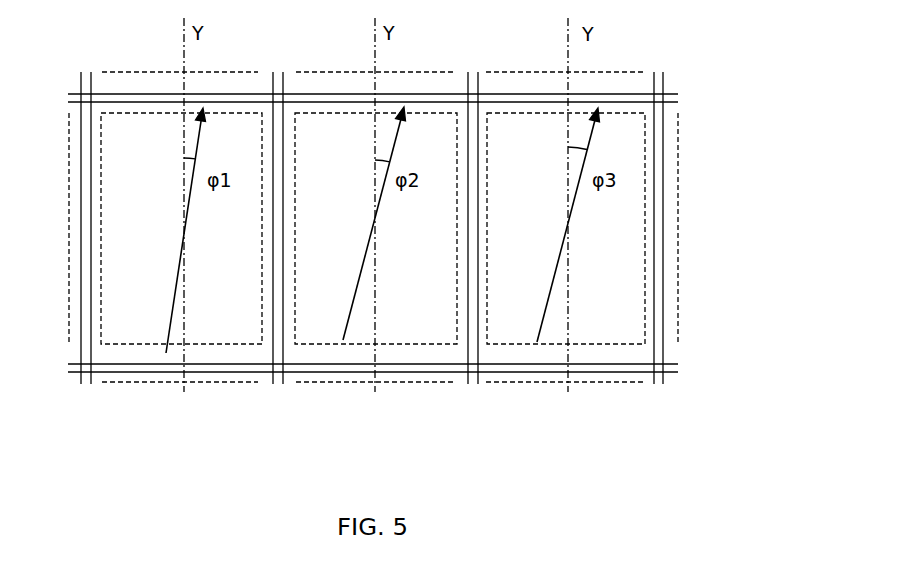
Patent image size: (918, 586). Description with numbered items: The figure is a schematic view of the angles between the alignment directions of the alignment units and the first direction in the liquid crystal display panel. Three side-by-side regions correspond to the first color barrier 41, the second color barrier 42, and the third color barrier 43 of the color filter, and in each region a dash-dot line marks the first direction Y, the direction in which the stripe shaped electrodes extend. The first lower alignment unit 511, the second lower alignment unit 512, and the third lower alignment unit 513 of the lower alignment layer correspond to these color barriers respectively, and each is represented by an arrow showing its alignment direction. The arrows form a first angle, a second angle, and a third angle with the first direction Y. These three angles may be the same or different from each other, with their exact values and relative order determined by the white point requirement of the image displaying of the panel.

The first color barrier 41 is at (165, 125).
The second color barrier 42 is at (357, 115).
The third color barrier 43 is at (543, 115).
The first lower alignment unit 511 is at (171, 287).
The second lower alignment unit 512 is at (352, 307).
The third lower alignment unit 513 is at (556, 270).